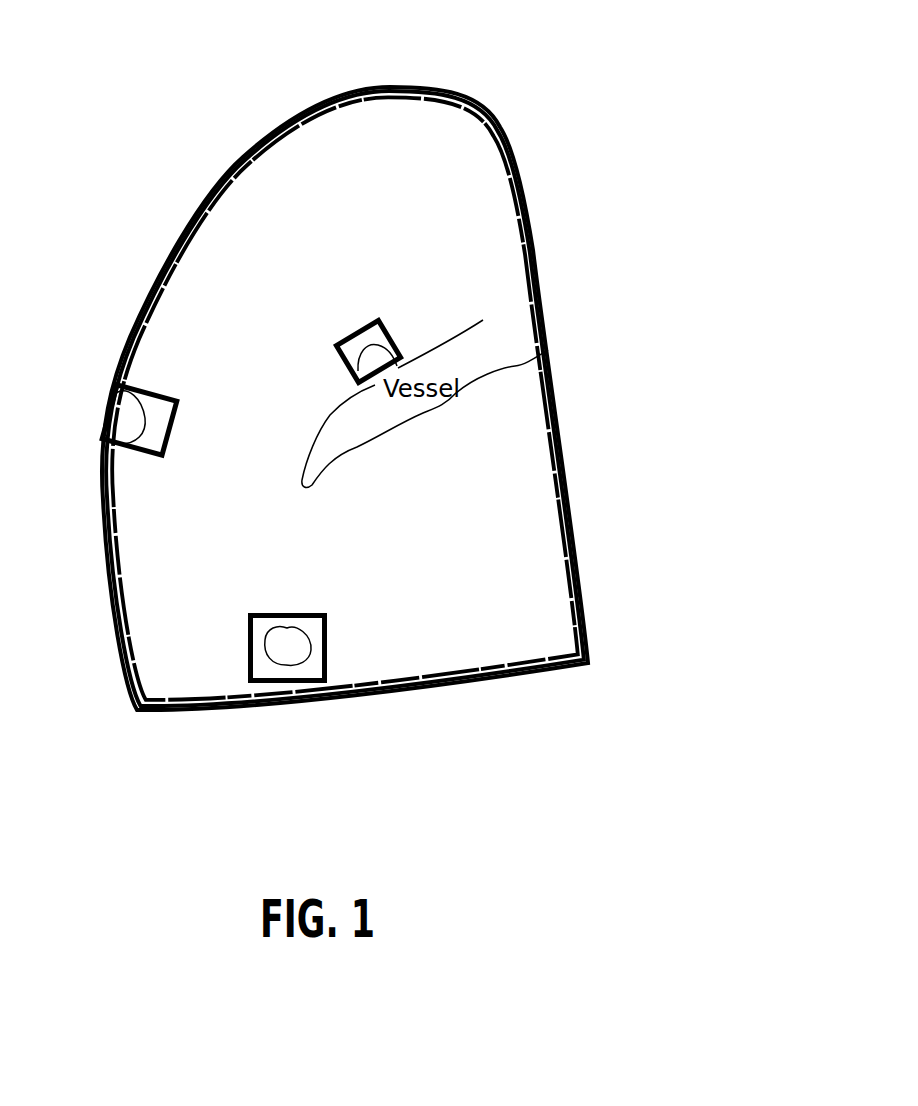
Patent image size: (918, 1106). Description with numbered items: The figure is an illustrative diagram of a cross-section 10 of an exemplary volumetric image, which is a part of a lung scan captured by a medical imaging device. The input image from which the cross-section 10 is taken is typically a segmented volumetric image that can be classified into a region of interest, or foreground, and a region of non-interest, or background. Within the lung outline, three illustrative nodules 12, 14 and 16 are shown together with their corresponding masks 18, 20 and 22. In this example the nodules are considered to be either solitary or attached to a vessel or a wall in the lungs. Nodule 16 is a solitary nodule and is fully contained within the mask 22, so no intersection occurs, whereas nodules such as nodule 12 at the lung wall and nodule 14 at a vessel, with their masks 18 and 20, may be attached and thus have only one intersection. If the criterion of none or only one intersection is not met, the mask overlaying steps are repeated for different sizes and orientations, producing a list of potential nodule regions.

The cross-section 10 is at (515, 118).
The nodule 12 is at (117, 410).
The nodule 14 is at (368, 343).
The nodule 16 is at (290, 665).
The mask 18 is at (110, 448).
The mask 20 is at (338, 343).
The mask 22 is at (260, 683).